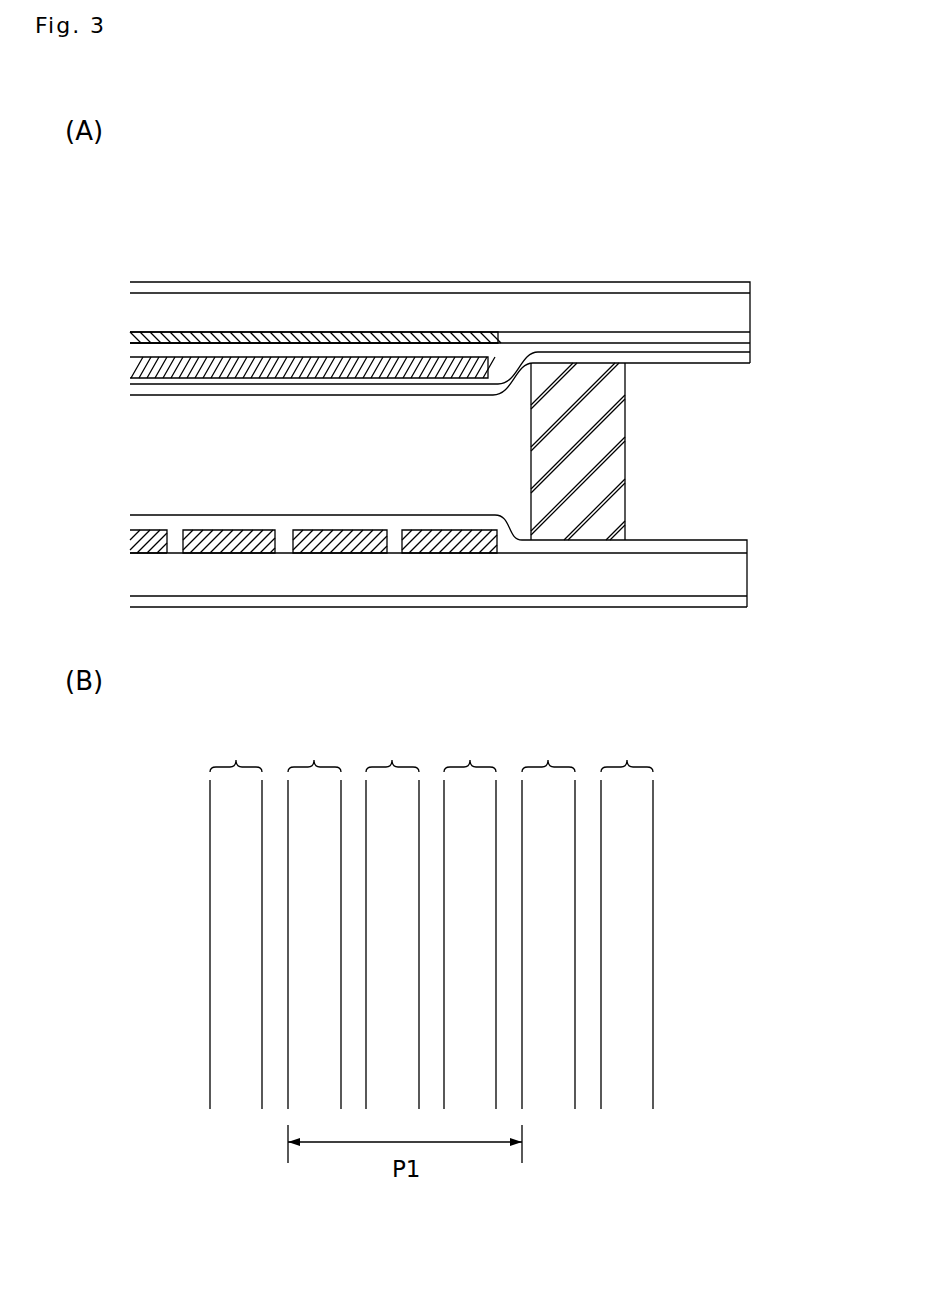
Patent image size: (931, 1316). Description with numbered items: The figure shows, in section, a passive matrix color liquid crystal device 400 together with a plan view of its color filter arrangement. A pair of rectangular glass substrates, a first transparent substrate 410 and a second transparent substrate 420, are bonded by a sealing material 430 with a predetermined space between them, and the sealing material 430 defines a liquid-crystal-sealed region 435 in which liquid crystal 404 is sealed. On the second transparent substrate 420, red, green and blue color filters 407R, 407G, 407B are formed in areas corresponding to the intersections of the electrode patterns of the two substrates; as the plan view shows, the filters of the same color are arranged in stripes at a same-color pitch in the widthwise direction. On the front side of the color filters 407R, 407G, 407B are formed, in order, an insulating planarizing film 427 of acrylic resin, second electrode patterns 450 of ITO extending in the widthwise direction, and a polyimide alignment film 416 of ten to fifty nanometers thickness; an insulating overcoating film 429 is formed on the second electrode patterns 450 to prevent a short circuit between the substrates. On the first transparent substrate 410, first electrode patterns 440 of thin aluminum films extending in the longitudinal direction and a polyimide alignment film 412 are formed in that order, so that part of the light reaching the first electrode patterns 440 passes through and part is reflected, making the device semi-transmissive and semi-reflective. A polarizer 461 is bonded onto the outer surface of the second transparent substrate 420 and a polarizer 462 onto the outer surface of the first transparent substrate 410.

The liquid crystal device 400 is at (695, 195).
The second transparent substrate 420 is at (122, 293).
The first transparent substrate 410 is at (118, 510).
The polarizer 461 is at (597, 287).
The polarizer 462 is at (453, 600).
The red color filter 407R is at (247, 331).
The green color filter 407G is at (407, 331).
The blue color filter 407B is at (165, 331).
The insulating planarizing film 427 is at (313, 353).
The alignment film 416 is at (343, 386).
The second electrode patterns 450 is at (223, 378).
The insulating overcoating film 429 is at (453, 385).
The liquid-crystal-sealed region 435 is at (303, 466).
The liquid crystal 404 is at (359, 466).
The sealing material 430 is at (613, 463).
The alignment film 412 is at (297, 522).
The first electrode patterns 440 is at (348, 538).